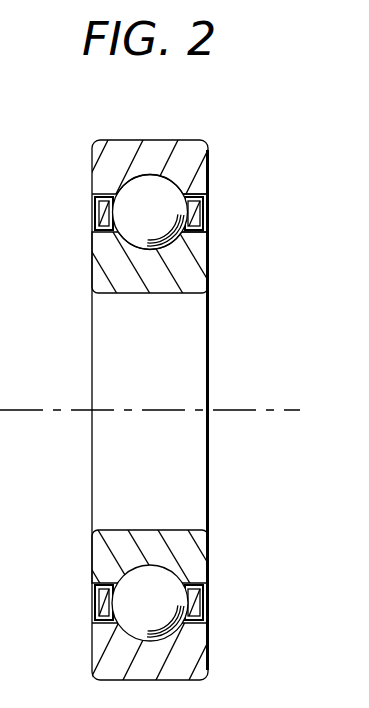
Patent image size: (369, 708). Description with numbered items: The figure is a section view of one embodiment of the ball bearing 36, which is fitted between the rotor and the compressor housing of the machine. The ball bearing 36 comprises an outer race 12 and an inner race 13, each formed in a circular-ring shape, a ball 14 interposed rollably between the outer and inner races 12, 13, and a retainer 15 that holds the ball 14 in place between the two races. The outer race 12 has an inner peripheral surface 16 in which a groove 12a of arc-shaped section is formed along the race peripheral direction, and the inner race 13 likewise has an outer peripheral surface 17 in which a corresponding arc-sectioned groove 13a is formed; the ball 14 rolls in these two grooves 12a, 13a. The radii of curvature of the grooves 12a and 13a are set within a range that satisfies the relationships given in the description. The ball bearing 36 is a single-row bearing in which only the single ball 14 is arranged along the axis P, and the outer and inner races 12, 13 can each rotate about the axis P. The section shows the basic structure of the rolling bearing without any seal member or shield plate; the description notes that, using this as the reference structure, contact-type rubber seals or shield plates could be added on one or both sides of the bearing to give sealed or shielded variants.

The ball bearing 36 is at (233, 132).
The outer race 12 is at (200, 172).
The groove 12a is at (147, 178).
The inner race 13 is at (200, 265).
The groove 13a is at (135, 227).
The ball 14 is at (128, 247).
The retainer 15 is at (210, 212).
The inner peripheral surface 16 is at (213, 203).
The outer peripheral surface 17 is at (212, 229).
The axis P is at (240, 412).